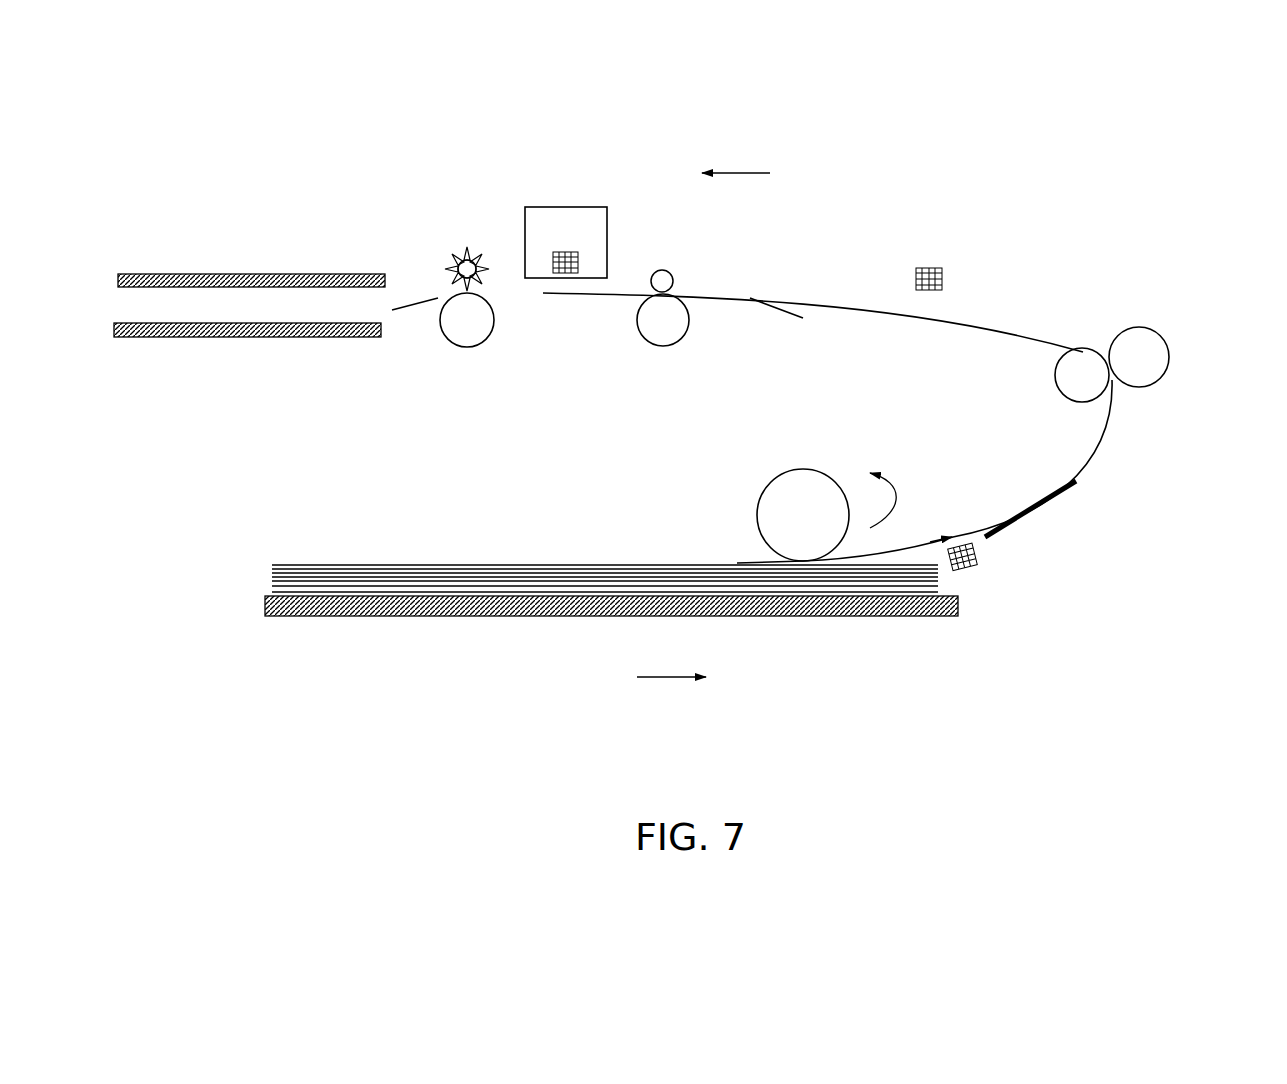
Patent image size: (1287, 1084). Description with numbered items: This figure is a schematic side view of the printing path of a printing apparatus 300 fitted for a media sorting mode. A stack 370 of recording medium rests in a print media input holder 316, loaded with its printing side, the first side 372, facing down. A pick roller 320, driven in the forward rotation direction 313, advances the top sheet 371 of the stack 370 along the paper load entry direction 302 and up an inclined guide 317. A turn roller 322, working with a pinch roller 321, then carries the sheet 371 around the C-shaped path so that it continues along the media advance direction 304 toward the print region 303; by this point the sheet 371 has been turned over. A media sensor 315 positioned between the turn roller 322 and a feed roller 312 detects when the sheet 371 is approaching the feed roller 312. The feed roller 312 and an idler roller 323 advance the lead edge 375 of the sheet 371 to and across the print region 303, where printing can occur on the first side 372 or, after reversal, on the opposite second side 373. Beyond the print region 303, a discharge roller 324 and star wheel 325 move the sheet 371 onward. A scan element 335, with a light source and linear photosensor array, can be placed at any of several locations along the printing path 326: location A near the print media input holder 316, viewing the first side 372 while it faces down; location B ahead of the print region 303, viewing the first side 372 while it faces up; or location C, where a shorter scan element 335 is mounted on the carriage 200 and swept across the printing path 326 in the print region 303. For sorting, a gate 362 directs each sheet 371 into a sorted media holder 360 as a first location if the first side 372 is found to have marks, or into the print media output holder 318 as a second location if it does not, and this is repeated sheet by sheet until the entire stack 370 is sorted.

The printing apparatus 300 is at (413, 106).
The carriage 200 is at (557, 207).
The media advance direction 304 is at (738, 173).
The scan element 335 is at (1036, 592).
The star wheel 325 is at (462, 250).
The sorted media holder 360 is at (232, 274).
The print media output holder 318 is at (253, 338).
The gate 362 is at (418, 303).
The discharge roller 324 is at (487, 327).
The print region 303 is at (582, 285).
The lead edge 375 is at (540, 304).
The idler roller 323 is at (667, 270).
The feed roller 312 is at (685, 325).
The media sensor 315 is at (767, 307).
The first side 372 is at (805, 298).
The sheet 371 is at (912, 322).
The second side 373 is at (993, 327).
The turn roller 322 is at (1058, 358).
The pinch roller 321 is at (1170, 362).
The forward rotation direction 313 is at (900, 487).
The pick roller 320 is at (772, 482).
The inclined guide 317 is at (1050, 505).
The stack 370 is at (255, 575).
The print media input holder 316 is at (480, 616).
The paper load entry direction 302 is at (663, 682).
The printing path 326 is at (1240, 658).